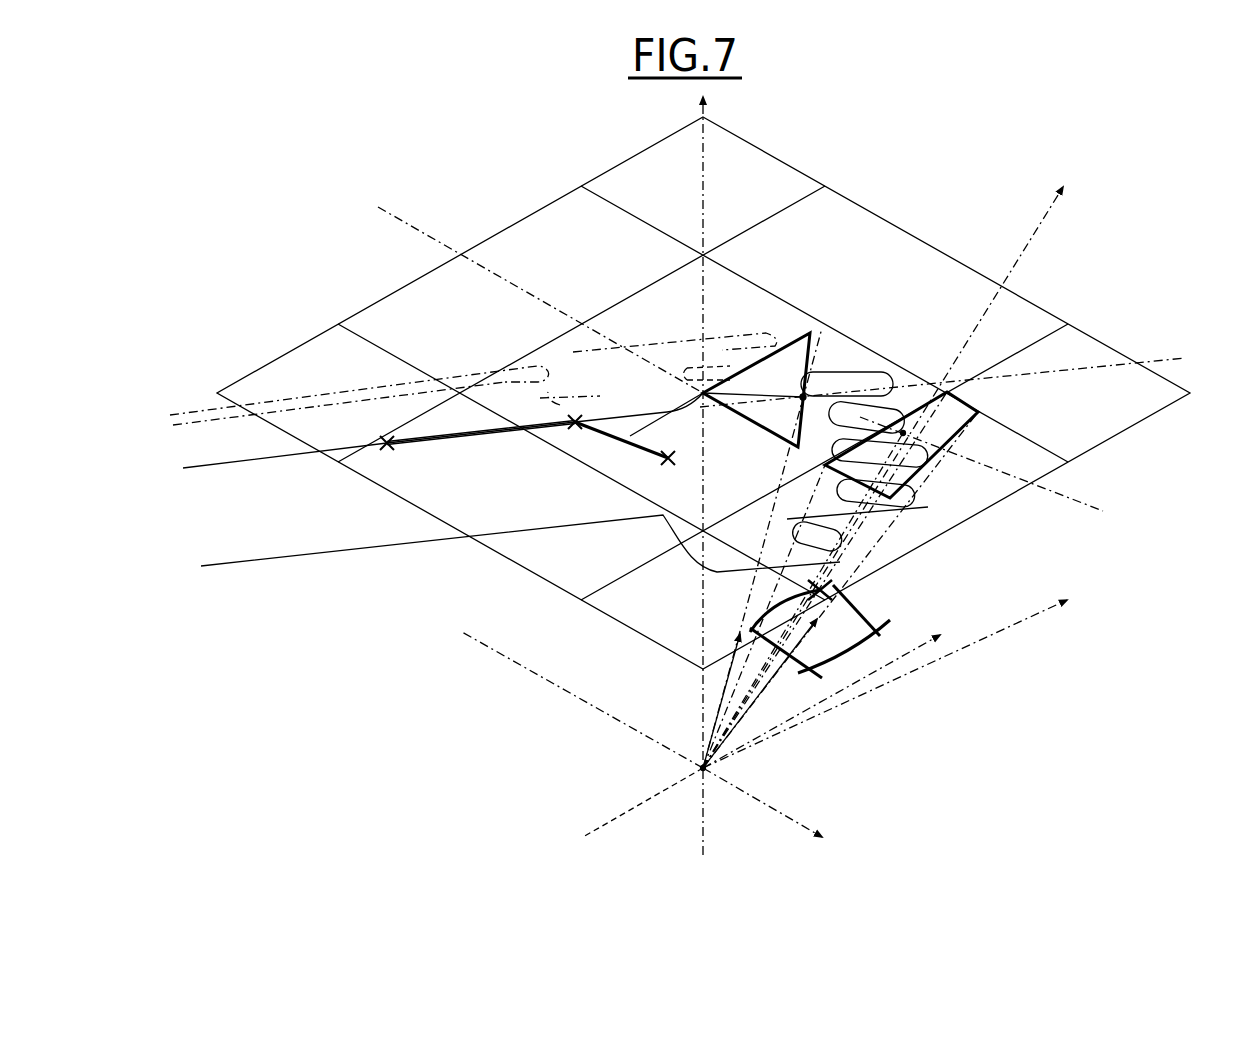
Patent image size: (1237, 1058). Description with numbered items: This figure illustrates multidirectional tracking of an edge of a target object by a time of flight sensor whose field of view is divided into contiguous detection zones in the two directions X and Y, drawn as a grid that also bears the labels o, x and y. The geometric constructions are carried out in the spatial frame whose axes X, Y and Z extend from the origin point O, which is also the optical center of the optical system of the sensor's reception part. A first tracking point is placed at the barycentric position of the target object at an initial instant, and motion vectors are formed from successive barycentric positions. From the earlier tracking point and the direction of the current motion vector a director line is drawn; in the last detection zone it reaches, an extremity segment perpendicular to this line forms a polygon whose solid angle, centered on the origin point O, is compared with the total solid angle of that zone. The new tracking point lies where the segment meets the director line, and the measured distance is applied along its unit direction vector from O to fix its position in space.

The reference point o is at (717, 368).
The Z axis Z is at (713, 472).
The y axis y is at (823, 512).
The x axis x is at (764, 684).
The X axis X is at (764, 802).
The Y axis Y is at (822, 701).
The origin point O is at (703, 770).